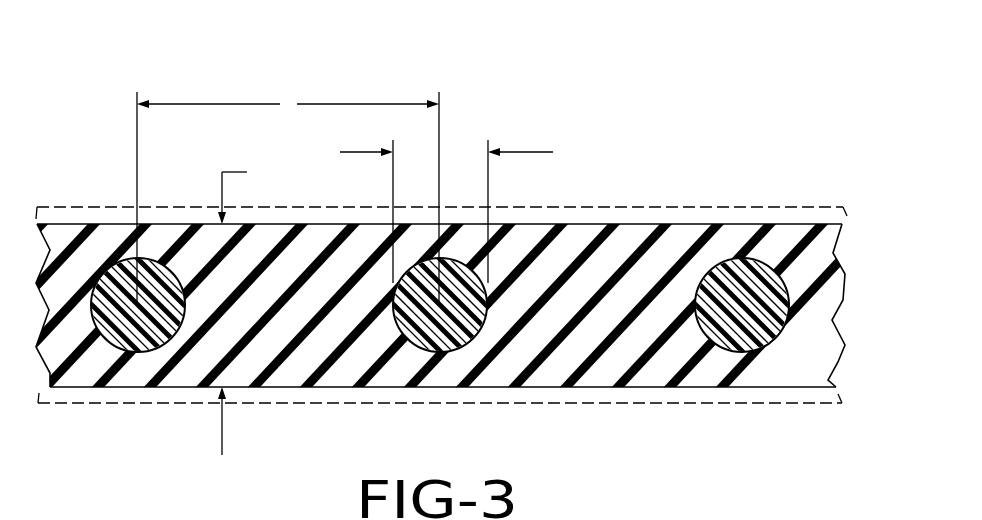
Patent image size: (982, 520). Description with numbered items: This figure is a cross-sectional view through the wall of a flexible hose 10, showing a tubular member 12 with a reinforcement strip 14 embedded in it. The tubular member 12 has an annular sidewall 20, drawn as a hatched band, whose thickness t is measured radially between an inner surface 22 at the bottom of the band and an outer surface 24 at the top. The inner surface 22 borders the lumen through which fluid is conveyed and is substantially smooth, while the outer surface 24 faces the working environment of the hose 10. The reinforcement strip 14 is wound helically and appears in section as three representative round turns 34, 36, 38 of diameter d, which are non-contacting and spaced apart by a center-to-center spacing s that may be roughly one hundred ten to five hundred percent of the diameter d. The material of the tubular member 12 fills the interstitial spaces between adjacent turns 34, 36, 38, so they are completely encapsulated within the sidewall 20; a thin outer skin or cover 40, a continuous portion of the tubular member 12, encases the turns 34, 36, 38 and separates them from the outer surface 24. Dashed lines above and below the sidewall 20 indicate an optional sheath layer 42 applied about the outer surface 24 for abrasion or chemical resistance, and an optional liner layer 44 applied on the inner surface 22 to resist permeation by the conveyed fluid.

The flexible hose 10 is at (112, 119).
The tubular member 12 is at (707, 372).
The reinforcement strip 14 is at (427, 272).
The annular sidewall 20 is at (86, 366).
The inner surface 22 is at (634, 397).
The outer surface 24 is at (634, 215).
The turn 34 is at (138, 305).
The turn 36 is at (440, 305).
The turn 38 is at (728, 280).
The cover 40 is at (737, 224).
The sheath layer 42 is at (797, 207).
The liner layer 44 is at (797, 404).